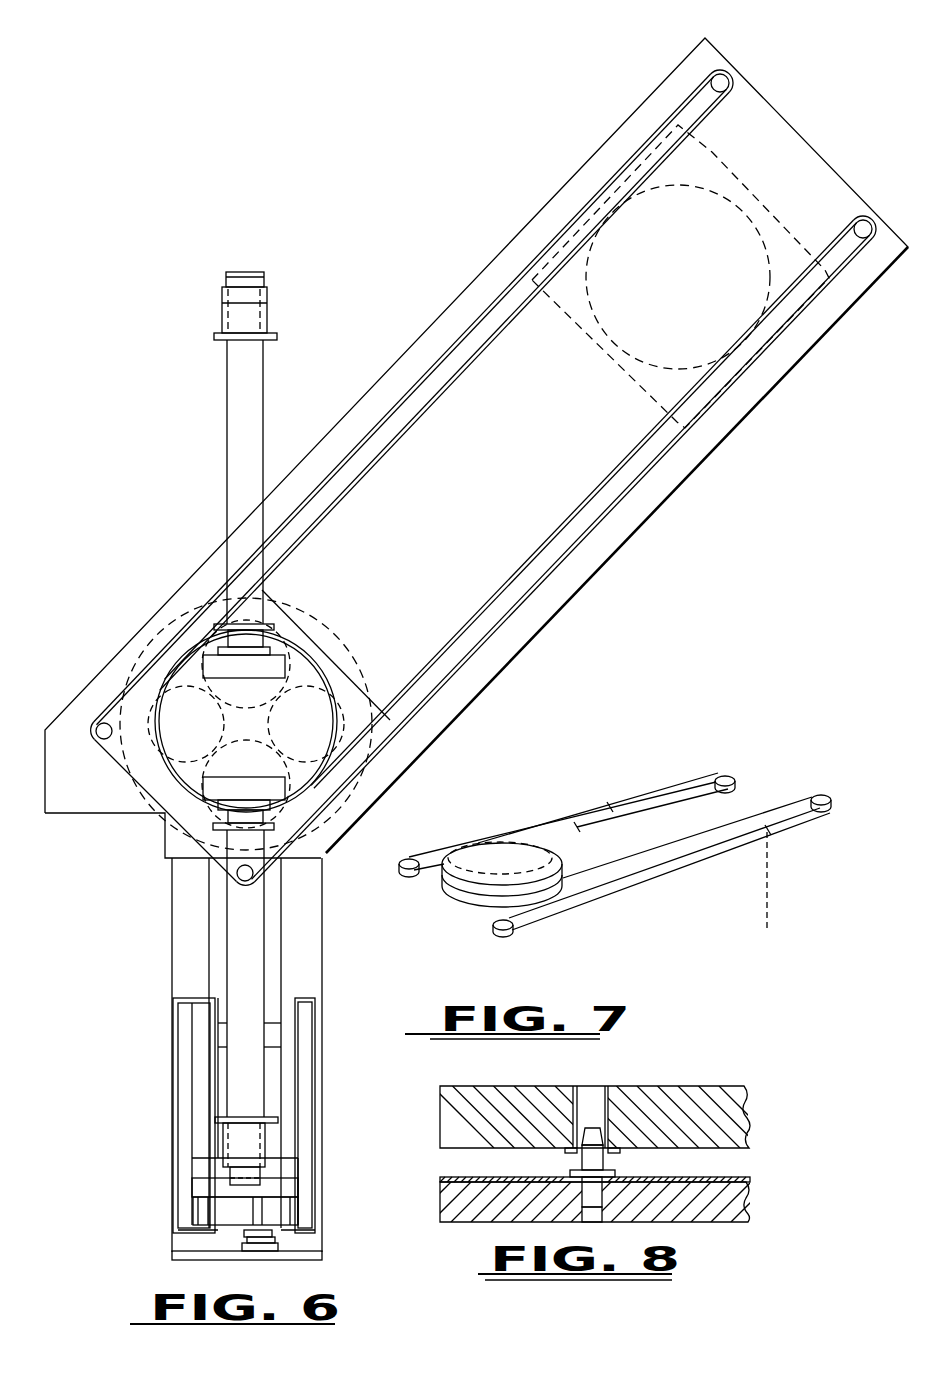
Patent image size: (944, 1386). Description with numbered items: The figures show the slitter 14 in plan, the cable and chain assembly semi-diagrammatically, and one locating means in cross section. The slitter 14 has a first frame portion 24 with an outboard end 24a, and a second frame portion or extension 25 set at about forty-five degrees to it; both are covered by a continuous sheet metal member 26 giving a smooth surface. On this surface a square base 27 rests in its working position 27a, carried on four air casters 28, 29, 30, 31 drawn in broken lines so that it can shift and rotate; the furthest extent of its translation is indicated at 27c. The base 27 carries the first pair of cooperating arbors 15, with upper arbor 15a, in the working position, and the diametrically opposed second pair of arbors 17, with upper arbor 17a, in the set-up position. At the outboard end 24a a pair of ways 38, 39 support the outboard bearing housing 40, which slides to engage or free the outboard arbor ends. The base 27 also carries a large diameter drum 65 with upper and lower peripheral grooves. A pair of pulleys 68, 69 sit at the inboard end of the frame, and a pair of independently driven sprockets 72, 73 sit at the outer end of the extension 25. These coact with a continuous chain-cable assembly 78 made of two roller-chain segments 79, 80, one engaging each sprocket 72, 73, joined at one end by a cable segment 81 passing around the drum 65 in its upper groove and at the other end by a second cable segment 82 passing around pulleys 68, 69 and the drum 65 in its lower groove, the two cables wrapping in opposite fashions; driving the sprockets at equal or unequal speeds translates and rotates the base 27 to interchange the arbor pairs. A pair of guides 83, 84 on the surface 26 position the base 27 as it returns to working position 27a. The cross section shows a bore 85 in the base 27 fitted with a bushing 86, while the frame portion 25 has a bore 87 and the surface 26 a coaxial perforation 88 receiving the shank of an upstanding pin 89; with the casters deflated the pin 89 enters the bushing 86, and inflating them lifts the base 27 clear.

In FIG. 6, the slitter 14 is at (438, 316).
In FIG. 6, the first pair of cooperating arbors 15 is at (264, 913).
In FIG. 6, the upper arbor 15a is at (254, 878).
In FIG. 6, the second pair of arbors 17 is at (263, 370).
In FIG. 6, the upper arbor 17a is at (250, 420).
In FIG. 6, the first frame portion 24 is at (323, 961).
In FIG. 6, the outboard end 24a is at (310, 1255).
In FIG. 8, the second frame portion or extension 25 is at (748, 1207).
In FIG. 6, the continuous sheet metal member 26 is at (612, 560).
In FIG. 8, the continuous sheet metal member 26 is at (738, 1177).
In FIG. 6, the base 27 is at (317, 647).
In FIG. 8, the base 27 is at (748, 1113).
In FIG. 6, the working position 27a is at (270, 597).
In FIG. 6, the furthest translated position 27c is at (790, 112).
In FIG. 6, the air caster 28 is at (340, 680).
In FIG. 6, the air caster 29 is at (288, 617).
In FIG. 6, the air caster 30 is at (244, 727).
In FIG. 6, the air caster 31 is at (270, 742).
In FIG. 6, the way 38 is at (303, 1041).
In FIG. 6, the way 39 is at (182, 1035).
In FIG. 6, the outboard bearing housing 40 is at (293, 1187).
In FIG. 6, the drum 65 is at (283, 710).
In FIG. 7, the drum 65 is at (468, 910).
In FIG. 6, the pulley 68 is at (237, 878).
In FIG. 7, the pulley 68 is at (505, 938).
In FIG. 6, the pulley 69 is at (96, 739).
In FIG. 7, the pulley 69 is at (413, 877).
In FIG. 6, the drive sprocket 72 is at (870, 222).
In FIG. 7, the drive sprocket 72 is at (826, 795).
In FIG. 6, the drive sprocket 73 is at (727, 77).
In FIG. 7, the drive sprocket 73 is at (733, 775).
In FIG. 6, the chain-cable assembly 78 is at (497, 631).
In FIG. 7, the chain-cable assembly 78 is at (669, 867).
In FIG. 7, the roller-chain segment 79 is at (783, 828).
In FIG. 7, the roller-chain segment 80 is at (662, 806).
In FIG. 7, the cable segment 81 is at (567, 831).
In FIG. 7, the second cable segment 82 is at (588, 904).
In FIG. 6, the guide 83 is at (213, 597).
In FIG. 6, the guide 84 is at (395, 753).
In FIG. 8, the bore 85 is at (609, 1104).
In FIG. 8, the bushing 86 is at (585, 1107).
In FIG. 8, the bore 87 is at (593, 1212).
In FIG. 8, the perforation 88 is at (590, 1190).
In FIG. 8, the pin 89 is at (581, 1160).